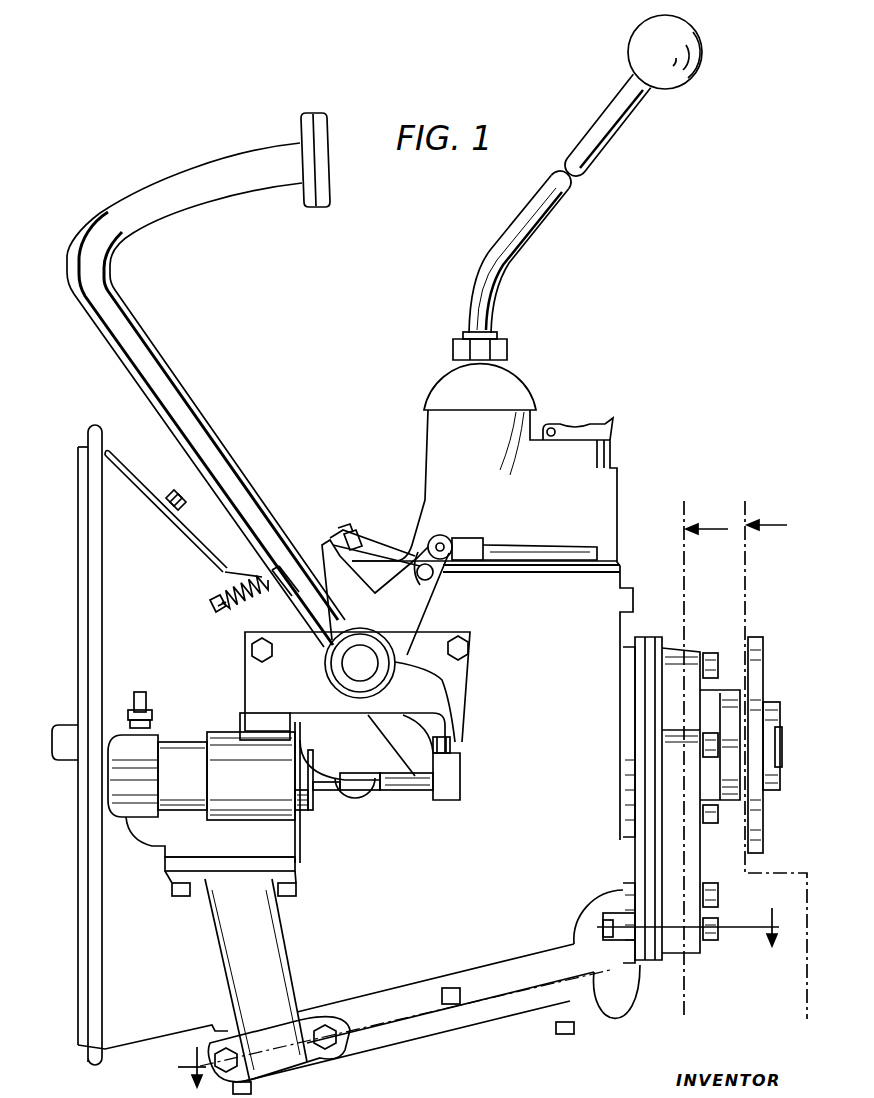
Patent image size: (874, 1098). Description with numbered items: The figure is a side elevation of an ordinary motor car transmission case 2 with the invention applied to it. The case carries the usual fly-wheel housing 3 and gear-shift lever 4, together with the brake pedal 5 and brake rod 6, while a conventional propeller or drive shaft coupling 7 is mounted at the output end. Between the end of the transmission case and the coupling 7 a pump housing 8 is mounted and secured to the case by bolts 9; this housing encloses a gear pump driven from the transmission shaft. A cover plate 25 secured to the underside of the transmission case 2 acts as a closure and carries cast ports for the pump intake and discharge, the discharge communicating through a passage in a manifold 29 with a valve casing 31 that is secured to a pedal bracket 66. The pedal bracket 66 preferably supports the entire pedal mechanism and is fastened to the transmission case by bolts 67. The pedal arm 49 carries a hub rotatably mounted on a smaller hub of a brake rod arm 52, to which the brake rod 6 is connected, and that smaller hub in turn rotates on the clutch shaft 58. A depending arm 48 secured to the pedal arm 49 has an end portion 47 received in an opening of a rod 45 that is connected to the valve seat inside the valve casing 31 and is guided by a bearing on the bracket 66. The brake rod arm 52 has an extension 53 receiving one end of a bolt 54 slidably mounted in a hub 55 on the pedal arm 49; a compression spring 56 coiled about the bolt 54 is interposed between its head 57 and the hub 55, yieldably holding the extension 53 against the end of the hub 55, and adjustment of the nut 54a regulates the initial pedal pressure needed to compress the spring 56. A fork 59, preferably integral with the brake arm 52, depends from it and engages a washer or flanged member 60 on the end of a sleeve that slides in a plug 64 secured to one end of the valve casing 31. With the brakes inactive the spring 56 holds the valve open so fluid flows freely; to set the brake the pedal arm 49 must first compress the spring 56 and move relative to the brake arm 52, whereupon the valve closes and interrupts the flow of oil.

The transmission case 2 is at (584, 722).
The fly-wheel housing 3 is at (122, 478).
The gear-shift lever 4 is at (562, 196).
The brake pedal 5 is at (318, 196).
The brake rod 6 is at (553, 551).
The propeller shaft coupling 7 is at (763, 660).
The pump housing 8 is at (673, 660).
The bolts 9 is at (713, 660).
The cover plate 25 is at (487, 975).
The manifold 29 is at (266, 940).
The valve casing 31 is at (179, 744).
The rod 45 is at (397, 792).
The end portion 47 is at (353, 800).
The depending arm 48 is at (396, 762).
The pedal arm 49 is at (293, 560).
The brake rod arm 52 is at (385, 597).
The extension 53 is at (334, 540).
The bolt 54 is at (363, 540).
The nut 54a is at (360, 534).
The hub 55 is at (288, 600).
The compression spring 56 is at (236, 590).
The head 57 is at (218, 608).
The clutch shaft 58 is at (355, 669).
The fork 59 is at (342, 786).
The flanged member 60 is at (310, 786).
The plug 64 is at (304, 812).
The pedal bracket 66 is at (415, 688).
The bolts 67 is at (256, 652).